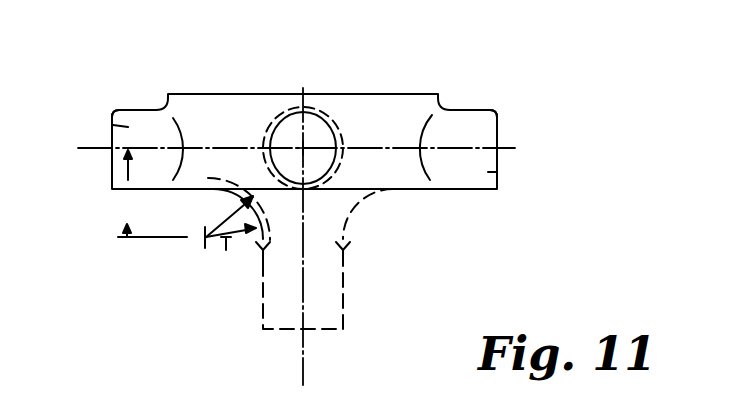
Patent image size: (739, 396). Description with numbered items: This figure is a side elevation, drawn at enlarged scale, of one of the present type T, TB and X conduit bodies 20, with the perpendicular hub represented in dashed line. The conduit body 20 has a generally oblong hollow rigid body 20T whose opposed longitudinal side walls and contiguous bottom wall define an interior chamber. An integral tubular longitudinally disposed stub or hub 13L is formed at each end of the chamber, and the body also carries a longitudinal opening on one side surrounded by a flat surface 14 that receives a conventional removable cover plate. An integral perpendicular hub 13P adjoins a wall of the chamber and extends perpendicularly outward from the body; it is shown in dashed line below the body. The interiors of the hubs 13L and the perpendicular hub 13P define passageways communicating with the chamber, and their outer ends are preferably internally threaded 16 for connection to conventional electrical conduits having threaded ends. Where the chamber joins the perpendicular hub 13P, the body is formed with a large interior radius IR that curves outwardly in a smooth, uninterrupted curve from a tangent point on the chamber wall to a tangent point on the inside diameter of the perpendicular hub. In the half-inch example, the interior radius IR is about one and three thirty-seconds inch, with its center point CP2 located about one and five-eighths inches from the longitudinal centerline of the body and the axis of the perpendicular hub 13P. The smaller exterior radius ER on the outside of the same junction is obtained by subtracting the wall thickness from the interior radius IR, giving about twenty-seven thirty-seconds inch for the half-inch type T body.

The conduit body 20 is at (547, 96).
The flat surface 14 is at (237, 93).
The longitudinal hub 13L is at (135, 119).
The oblong hollow rigid body 20T is at (408, 130).
The perpendicular hub 13P is at (308, 108).
The internal threads 16 is at (128, 127).
The center point CP2 is at (150, 193).
The interior radius IR is at (226, 212).
The exterior radius ER is at (234, 230).